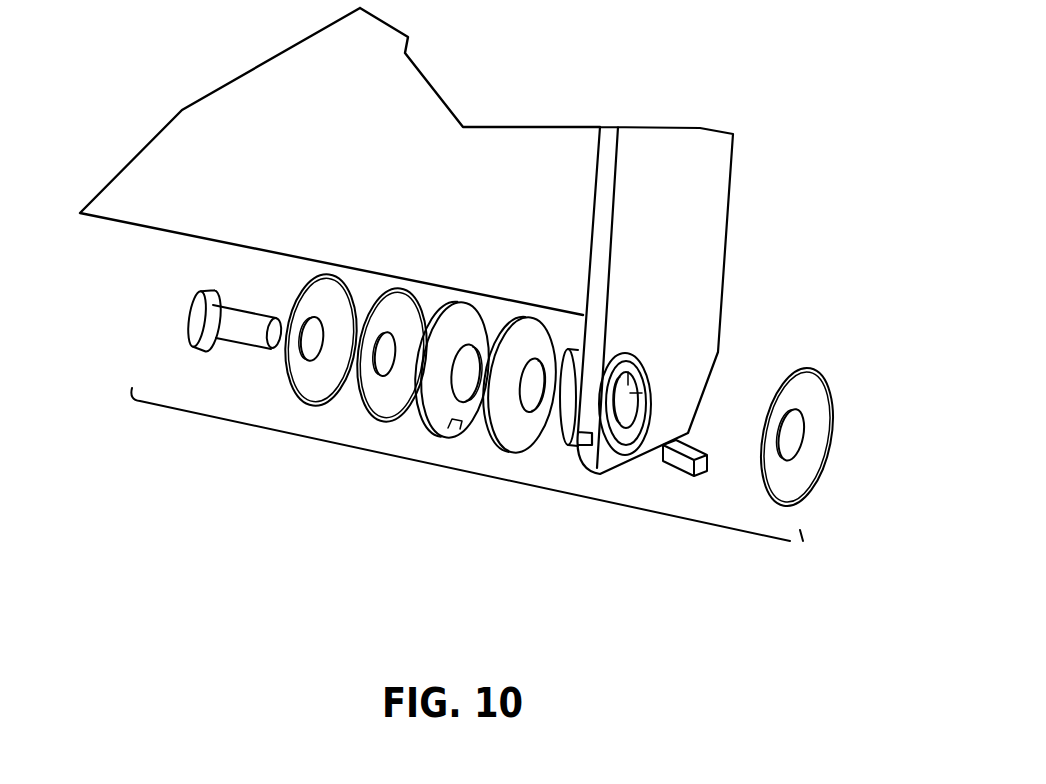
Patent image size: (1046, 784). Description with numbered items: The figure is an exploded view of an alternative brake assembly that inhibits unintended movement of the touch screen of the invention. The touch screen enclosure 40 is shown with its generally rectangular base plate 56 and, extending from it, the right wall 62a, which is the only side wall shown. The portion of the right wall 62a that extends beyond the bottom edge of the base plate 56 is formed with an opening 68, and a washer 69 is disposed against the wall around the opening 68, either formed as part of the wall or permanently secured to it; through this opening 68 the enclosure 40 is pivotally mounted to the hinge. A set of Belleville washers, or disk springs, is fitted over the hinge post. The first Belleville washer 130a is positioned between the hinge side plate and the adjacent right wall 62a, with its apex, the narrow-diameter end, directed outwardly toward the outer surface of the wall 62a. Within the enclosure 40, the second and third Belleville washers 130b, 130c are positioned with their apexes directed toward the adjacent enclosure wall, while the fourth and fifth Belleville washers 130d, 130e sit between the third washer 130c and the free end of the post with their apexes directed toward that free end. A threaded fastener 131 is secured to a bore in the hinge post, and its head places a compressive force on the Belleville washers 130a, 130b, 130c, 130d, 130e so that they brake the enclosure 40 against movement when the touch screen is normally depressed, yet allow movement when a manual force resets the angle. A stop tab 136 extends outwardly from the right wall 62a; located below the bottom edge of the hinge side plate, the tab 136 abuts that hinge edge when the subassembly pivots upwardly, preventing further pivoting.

The base plate 56 is at (370, 144).
The touch screen enclosure 40 is at (563, 124).
The right wall 62a is at (690, 236).
The opening 68 is at (637, 366).
The washer 69 is at (624, 432).
The stop tab 136 is at (697, 445).
The threaded fastener 131 is at (187, 326).
The first Belleville washer 130a is at (812, 362).
The second Belleville washer 130b is at (510, 452).
The third Belleville washer 130c is at (460, 437).
The fourth Belleville washer 130d is at (373, 420).
The fifth Belleville washer 130e is at (302, 406).